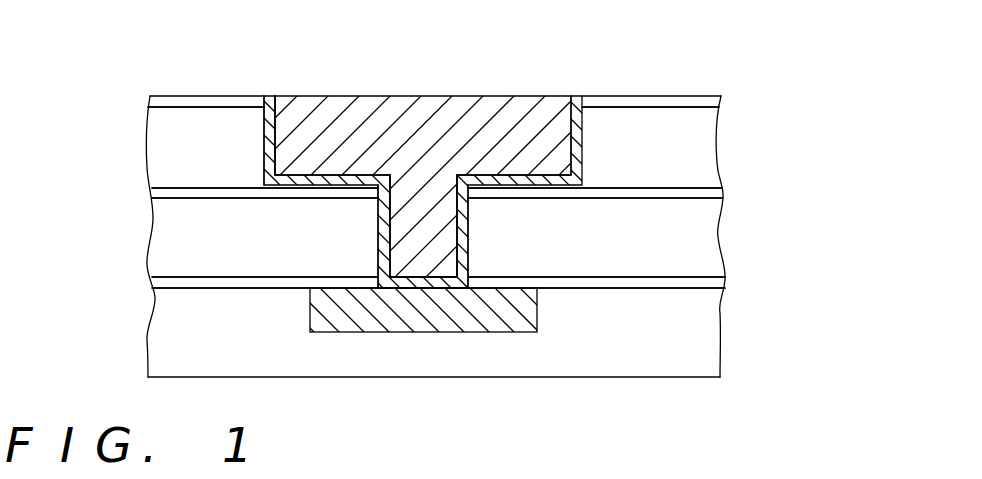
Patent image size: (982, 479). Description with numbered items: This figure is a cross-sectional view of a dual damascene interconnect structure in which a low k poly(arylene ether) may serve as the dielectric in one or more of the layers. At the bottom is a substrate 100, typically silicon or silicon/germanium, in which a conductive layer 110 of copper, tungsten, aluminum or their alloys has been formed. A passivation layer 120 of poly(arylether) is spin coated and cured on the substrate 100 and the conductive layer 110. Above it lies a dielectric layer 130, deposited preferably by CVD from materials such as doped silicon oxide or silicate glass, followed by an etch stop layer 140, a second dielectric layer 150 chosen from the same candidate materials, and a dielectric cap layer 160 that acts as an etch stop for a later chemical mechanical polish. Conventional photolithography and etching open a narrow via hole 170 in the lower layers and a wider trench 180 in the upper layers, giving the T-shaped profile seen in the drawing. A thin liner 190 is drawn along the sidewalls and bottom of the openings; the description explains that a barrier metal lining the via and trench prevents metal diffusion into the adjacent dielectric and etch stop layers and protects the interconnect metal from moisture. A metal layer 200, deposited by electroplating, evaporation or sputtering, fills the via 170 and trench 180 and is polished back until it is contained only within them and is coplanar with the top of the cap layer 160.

The substrate 100 is at (700, 325).
The conductive layer 110 is at (407, 320).
The passivation layer 120 is at (163, 287).
The dielectric layer 130 is at (163, 247).
The etch stop layer 140 is at (163, 195).
The second dielectric layer 150 is at (163, 134).
The cap layer 160 is at (162, 104).
The via hole 170 is at (377, 225).
The trench 180 is at (263, 158).
The barrier layer 190 is at (272, 115).
The metal layer 200 is at (461, 108).